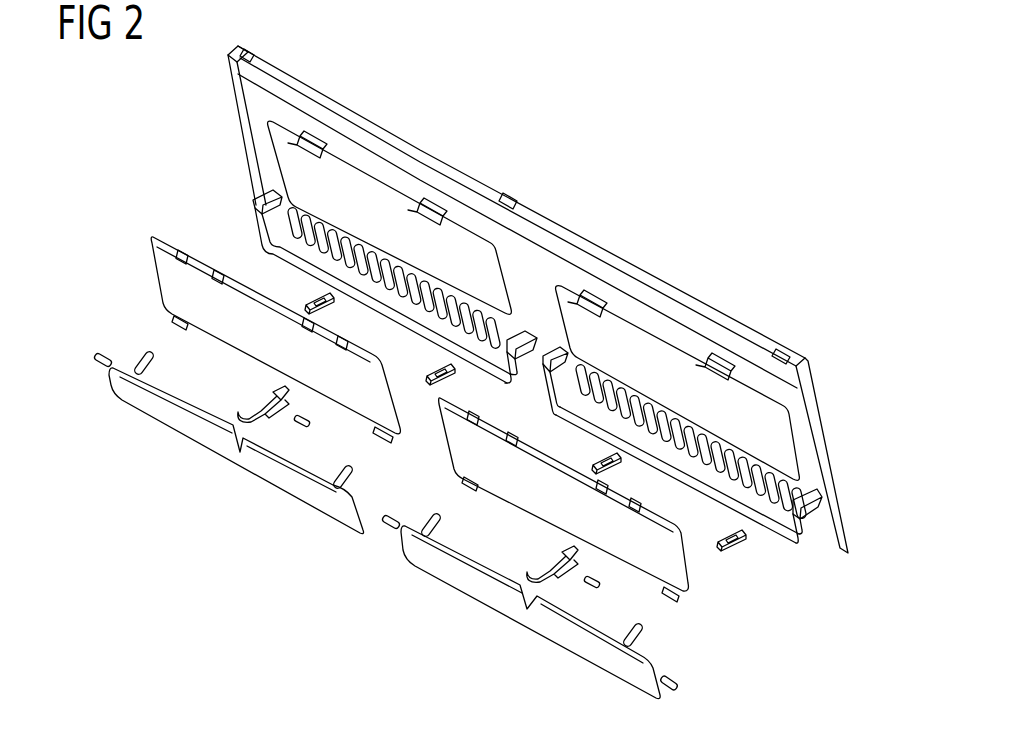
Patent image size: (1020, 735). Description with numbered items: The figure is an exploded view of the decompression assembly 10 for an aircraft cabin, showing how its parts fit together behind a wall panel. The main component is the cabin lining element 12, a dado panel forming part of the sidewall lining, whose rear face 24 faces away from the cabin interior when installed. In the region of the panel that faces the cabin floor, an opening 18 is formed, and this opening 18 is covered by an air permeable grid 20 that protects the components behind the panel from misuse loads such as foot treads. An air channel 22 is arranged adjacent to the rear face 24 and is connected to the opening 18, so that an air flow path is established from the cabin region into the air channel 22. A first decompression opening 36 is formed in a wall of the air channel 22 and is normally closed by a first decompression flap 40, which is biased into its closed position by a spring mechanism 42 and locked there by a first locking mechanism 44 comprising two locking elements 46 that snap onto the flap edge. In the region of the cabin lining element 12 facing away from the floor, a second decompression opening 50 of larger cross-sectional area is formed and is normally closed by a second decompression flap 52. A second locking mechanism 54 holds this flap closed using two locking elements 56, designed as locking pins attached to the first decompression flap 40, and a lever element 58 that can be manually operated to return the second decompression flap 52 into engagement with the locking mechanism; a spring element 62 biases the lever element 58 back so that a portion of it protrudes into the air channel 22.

The decompression assembly 10 is at (781, 211).
The cabin lining element 12 is at (543, 233).
The opening 18 is at (600, 380).
The air permeable grid 20 is at (716, 446).
The air channel 22 is at (790, 524).
The rear face 24 is at (600, 263).
The first decompression opening 36 is at (677, 481).
The first decompression flap 40 is at (586, 653).
The spring mechanism 42 is at (100, 366).
The first locking mechanism 44 is at (300, 288).
The locking element 46 is at (325, 307).
The second decompression opening 50 is at (655, 352).
The second decompression flap 52 is at (153, 250).
The second locking mechanism 54 is at (119, 354).
The locking element 56 is at (140, 357).
The lever element 58 is at (540, 570).
The spring element 62 is at (313, 425).